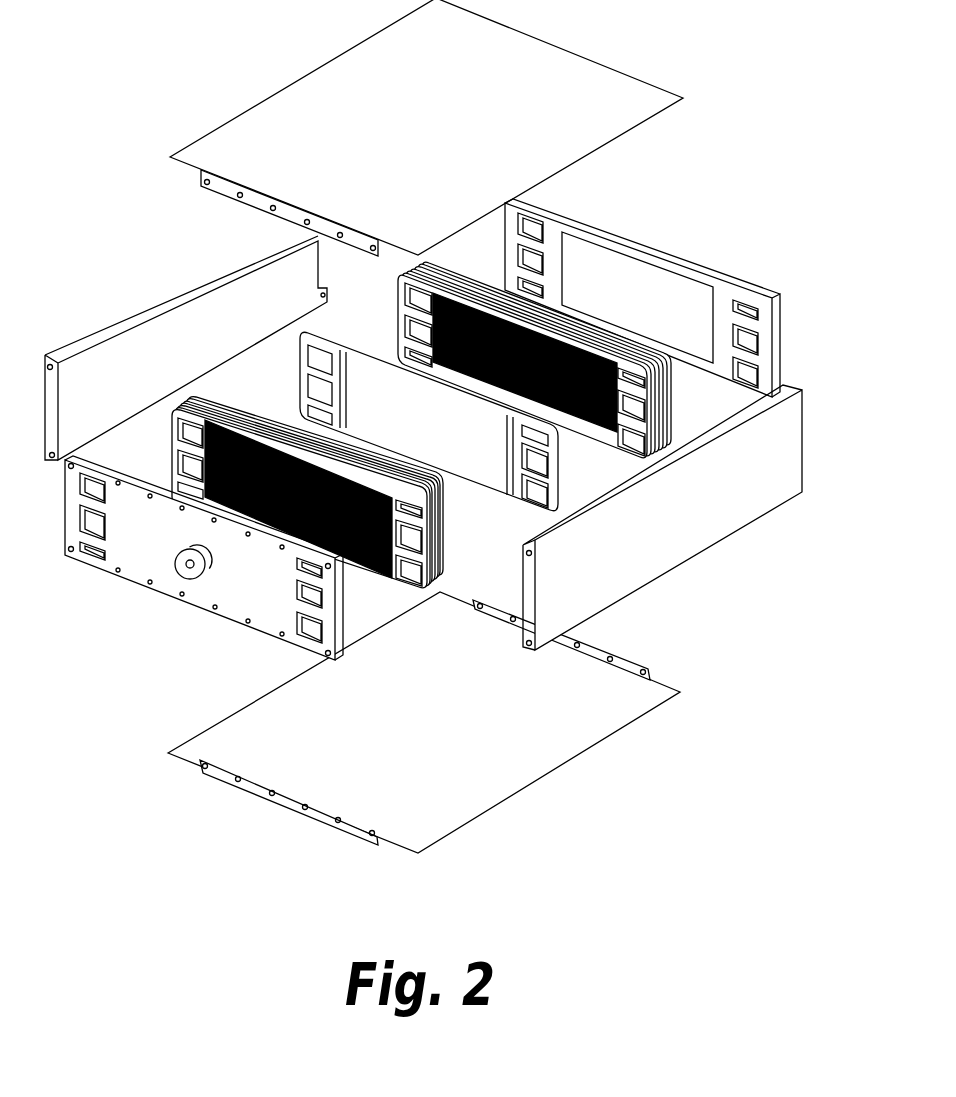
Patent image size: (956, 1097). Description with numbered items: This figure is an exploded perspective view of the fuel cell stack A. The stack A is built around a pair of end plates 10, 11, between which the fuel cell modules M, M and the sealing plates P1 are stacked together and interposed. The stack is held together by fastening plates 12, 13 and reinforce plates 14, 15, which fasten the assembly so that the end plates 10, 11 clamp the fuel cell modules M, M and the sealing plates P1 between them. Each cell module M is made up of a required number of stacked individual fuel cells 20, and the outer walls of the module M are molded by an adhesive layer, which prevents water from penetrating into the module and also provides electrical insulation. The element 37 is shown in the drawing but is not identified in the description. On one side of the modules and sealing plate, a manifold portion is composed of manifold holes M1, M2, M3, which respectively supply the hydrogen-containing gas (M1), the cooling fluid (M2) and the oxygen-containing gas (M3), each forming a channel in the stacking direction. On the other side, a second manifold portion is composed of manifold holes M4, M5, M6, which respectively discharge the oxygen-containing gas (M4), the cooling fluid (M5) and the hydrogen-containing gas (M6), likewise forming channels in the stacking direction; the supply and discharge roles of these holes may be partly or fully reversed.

The fuel cell stack A is at (124, 166).
The end plate 10 is at (156, 595).
The end plate 11 is at (684, 252).
The fastening plate 12 is at (123, 303).
The fastening plate 13 is at (693, 566).
The reinforce plate 14 is at (322, 85).
The reinforce plate 15 is at (510, 806).
The fuel cell 20 is at (662, 394).
The terminal/insulating plate 37 is at (338, 352).
The fuel cell module M is at (453, 425).
The manifold hole M1 is at (318, 352).
The manifold hole M2 is at (310, 388).
The manifold hole M3 is at (310, 407).
The manifold hole M4 is at (540, 433).
The manifold hole M5 is at (545, 465).
The manifold hole M6 is at (538, 489).
The sealing plate P1 is at (483, 435).